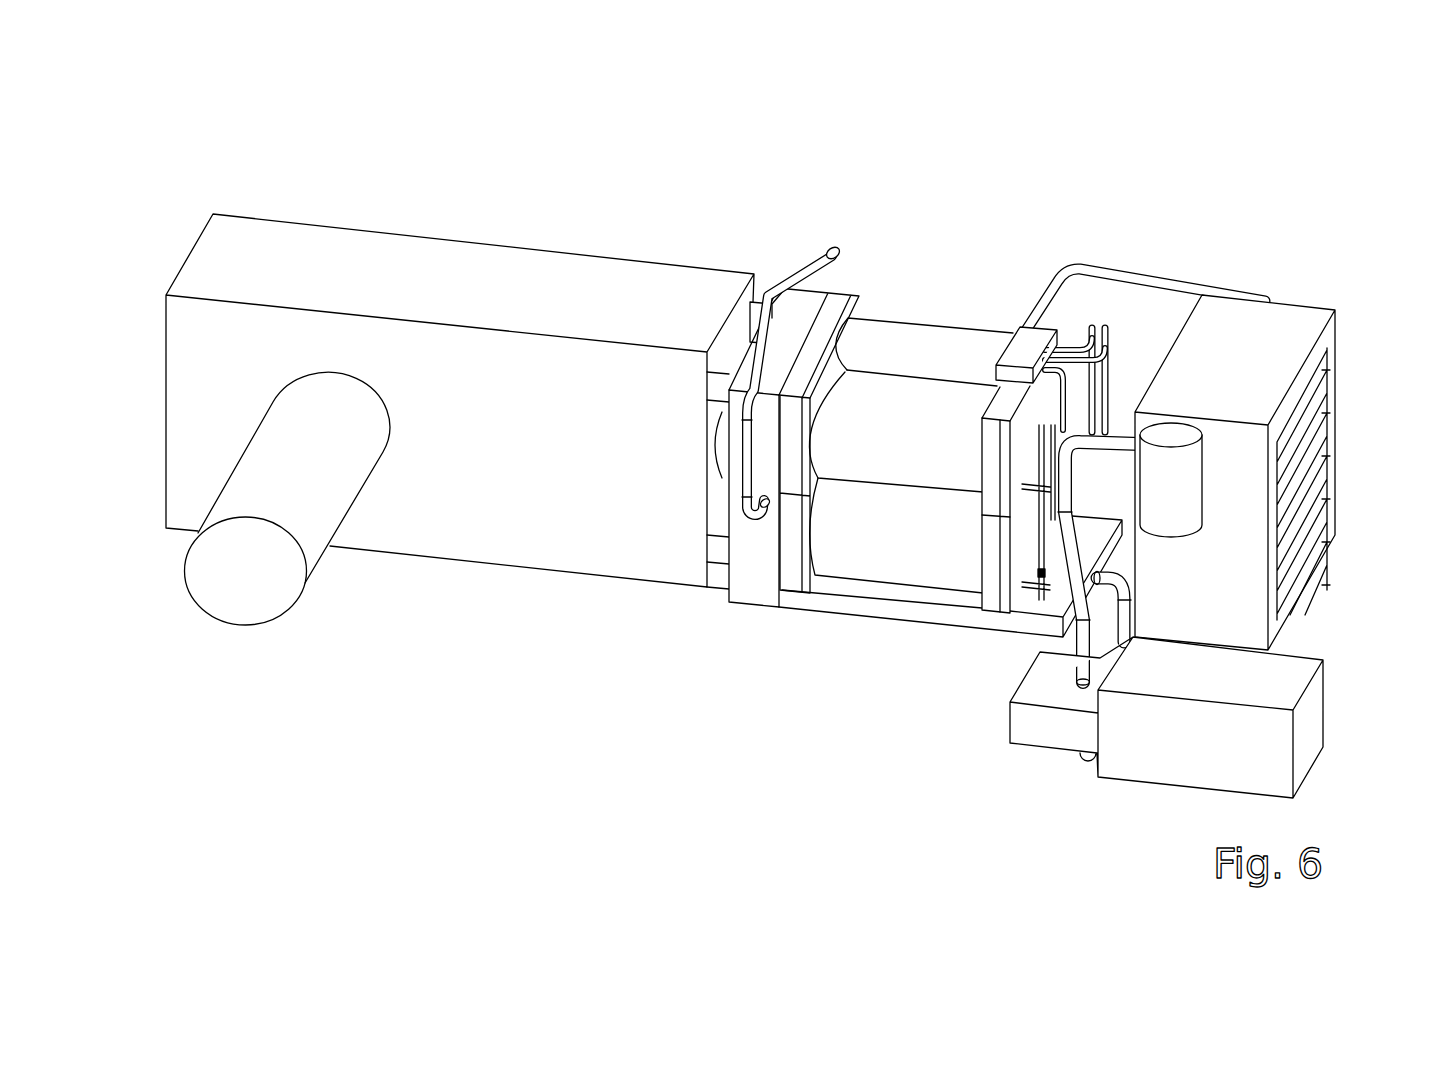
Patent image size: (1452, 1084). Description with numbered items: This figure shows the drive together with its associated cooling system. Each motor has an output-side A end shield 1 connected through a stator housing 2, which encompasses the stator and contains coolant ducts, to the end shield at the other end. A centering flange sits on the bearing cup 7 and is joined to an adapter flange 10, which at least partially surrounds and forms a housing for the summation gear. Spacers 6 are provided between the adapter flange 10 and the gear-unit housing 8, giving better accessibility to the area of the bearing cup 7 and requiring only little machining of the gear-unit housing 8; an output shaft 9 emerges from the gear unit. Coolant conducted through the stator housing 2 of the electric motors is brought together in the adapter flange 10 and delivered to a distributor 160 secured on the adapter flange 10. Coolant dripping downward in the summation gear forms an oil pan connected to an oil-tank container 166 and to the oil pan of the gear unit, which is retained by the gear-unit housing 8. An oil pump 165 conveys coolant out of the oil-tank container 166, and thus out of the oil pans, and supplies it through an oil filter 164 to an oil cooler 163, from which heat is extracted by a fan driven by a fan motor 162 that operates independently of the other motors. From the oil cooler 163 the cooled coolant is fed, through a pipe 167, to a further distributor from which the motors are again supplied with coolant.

The A end shield 1 is at (793, 565).
The stator housing 2 is at (922, 347).
The spacer 6 is at (721, 548).
The bearing cup 7 is at (727, 455).
The gear-unit housing 8 is at (565, 305).
The output shaft 9 is at (246, 577).
The adapter flange 10 is at (757, 565).
The distributor 160 is at (828, 265).
The fan motor 162 is at (1115, 433).
The oil cooler 163 is at (1228, 351).
The oil filter 164 is at (1172, 507).
The oil pump 165 is at (1184, 734).
The oil-tank container 166 is at (853, 607).
The pipe 167 is at (1042, 573).